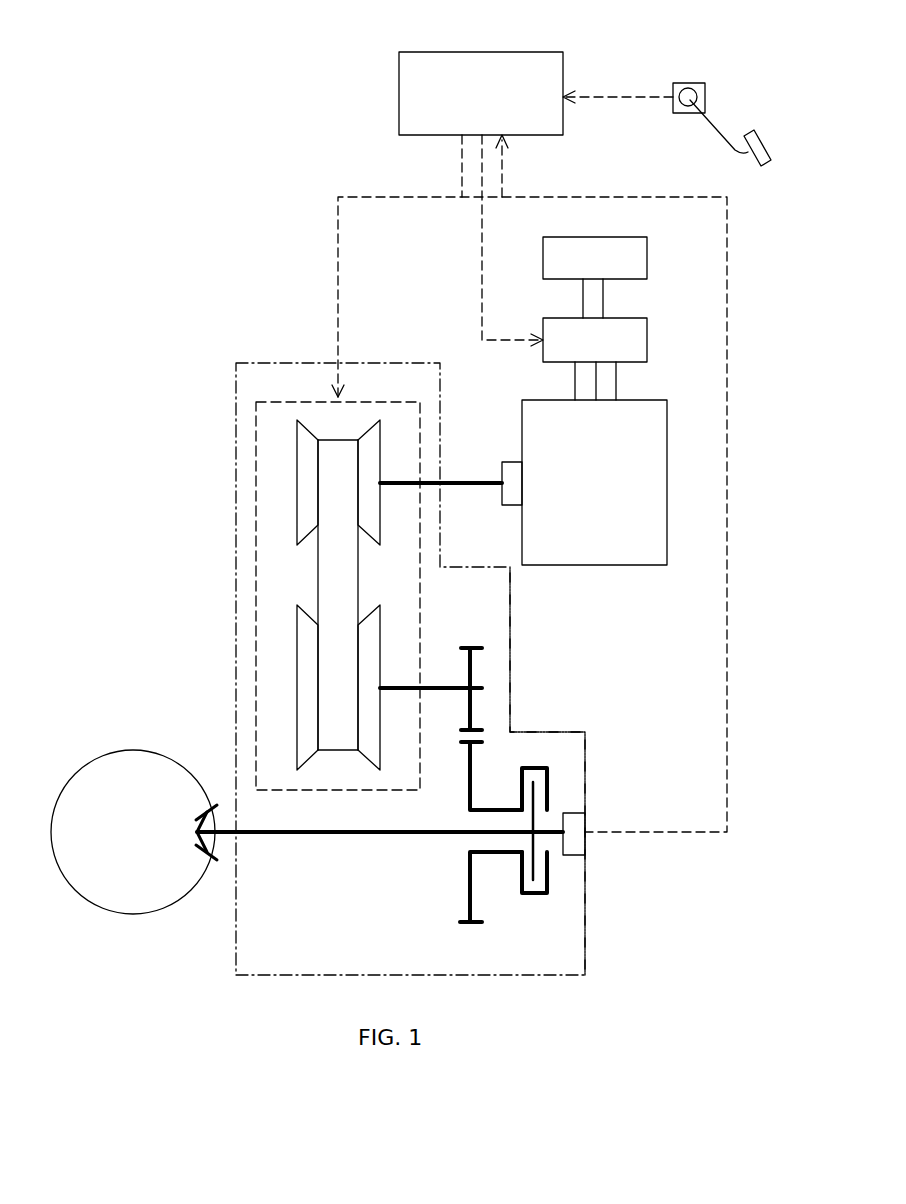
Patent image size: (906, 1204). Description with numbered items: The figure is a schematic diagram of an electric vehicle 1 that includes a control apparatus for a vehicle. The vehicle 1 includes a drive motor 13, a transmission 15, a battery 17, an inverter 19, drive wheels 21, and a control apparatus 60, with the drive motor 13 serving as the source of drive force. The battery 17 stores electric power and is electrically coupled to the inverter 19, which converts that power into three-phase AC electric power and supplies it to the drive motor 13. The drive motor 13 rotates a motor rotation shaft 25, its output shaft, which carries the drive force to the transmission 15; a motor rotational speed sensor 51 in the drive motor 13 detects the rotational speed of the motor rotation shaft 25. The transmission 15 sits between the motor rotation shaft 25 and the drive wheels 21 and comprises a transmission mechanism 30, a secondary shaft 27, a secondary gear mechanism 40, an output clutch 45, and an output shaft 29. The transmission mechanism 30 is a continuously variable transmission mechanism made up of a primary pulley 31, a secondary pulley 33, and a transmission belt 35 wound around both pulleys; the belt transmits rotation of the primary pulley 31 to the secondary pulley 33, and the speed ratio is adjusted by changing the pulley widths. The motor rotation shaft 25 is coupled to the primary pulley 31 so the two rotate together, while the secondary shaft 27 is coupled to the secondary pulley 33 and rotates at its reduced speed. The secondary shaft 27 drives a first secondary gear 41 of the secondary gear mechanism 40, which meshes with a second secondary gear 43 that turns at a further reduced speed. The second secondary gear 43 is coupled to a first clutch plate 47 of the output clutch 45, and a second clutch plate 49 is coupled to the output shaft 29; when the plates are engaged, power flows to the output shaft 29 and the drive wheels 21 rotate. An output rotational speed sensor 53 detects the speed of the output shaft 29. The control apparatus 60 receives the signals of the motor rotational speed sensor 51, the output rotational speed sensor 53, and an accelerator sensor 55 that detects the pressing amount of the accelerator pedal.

The electric vehicle 1 is at (739, 937).
The drive motor 13 is at (640, 400).
The transmission 15 is at (395, 363).
The battery 17 is at (632, 237).
The inverter 19 is at (632, 318).
The drive wheels 21 is at (138, 750).
The motor rotation shaft 25 is at (460, 483).
The secondary shaft 27 is at (433, 692).
The output shaft 29 is at (332, 836).
The transmission mechanism 30 is at (320, 402).
The primary pulley 31 is at (356, 440).
The secondary pulley 33 is at (372, 606).
The transmission belt 35 is at (318, 575).
The secondary gear mechanism 40 is at (465, 634).
The first secondary gear 41 is at (466, 684).
The second secondary gear 43 is at (462, 810).
The output clutch 45 is at (530, 904).
The first clutch plate 47 is at (522, 797).
The second clutch plate 49 is at (522, 866).
The motor rotational speed sensor 51 is at (510, 505).
The output rotational speed sensor 53 is at (574, 856).
The accelerator sensor 55 is at (690, 83).
The control apparatus 60 is at (507, 52).